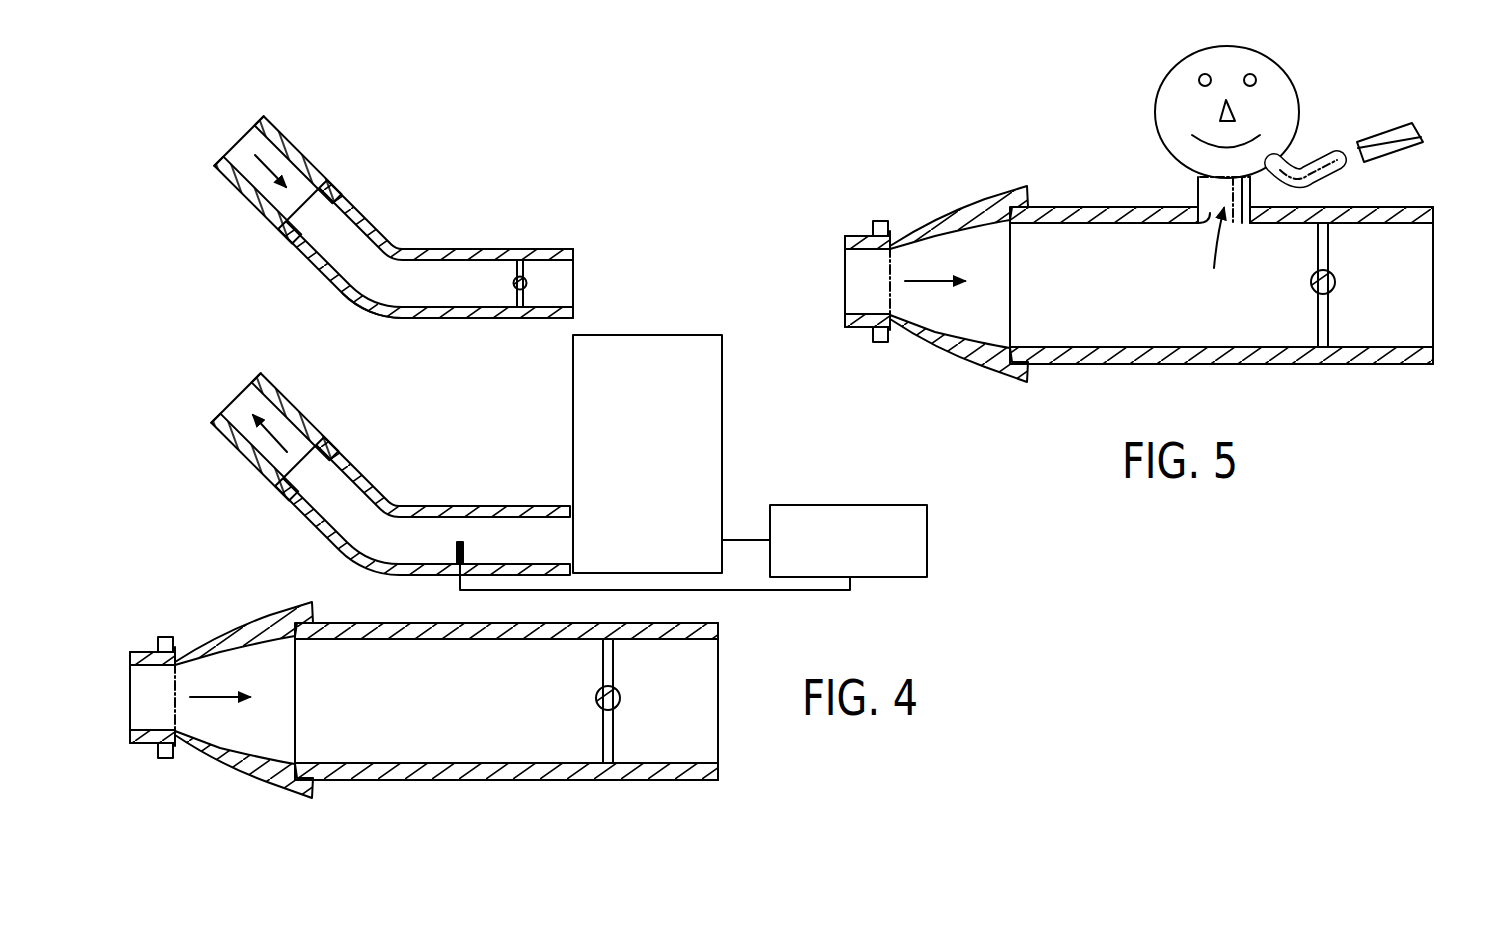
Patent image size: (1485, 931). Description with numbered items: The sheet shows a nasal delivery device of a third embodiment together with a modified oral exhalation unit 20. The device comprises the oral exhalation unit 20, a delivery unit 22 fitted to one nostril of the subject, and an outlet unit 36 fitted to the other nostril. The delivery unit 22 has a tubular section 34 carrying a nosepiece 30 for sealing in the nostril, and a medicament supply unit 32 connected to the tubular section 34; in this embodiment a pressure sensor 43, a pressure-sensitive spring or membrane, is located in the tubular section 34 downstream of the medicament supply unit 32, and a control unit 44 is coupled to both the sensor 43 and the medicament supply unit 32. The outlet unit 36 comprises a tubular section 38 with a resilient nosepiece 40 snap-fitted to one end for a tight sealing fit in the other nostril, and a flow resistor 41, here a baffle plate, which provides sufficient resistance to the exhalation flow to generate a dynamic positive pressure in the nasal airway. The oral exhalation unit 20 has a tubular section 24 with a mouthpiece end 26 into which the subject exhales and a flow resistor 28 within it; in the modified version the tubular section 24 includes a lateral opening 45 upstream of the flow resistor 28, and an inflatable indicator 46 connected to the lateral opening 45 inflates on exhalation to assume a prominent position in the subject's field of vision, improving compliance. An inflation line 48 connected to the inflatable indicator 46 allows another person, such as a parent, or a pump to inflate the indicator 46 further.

In FIG. 4, the oral exhalation unit 20 is at (506, 732).
In FIG. 5, the oral exhalation unit 20 is at (1221, 314).
In FIG. 4, the delivery unit 22 is at (469, 445).
In FIG. 4, the tubular section 24 is at (294, 722).
In FIG. 5, the tubular section 24 is at (1009, 304).
In FIG. 4, the inlet connector 26 is at (190, 669).
In FIG. 5, the inlet connector 26 is at (905, 254).
In FIG. 4, the flow resistor 28 is at (573, 701).
In FIG. 5, the flow resistor 28 is at (1289, 285).
In FIG. 4, the nosepiece 30 is at (255, 436).
In FIG. 4, the medicament supply unit 32 is at (677, 454).
In FIG. 4, the tubular section 34 is at (422, 506).
In FIG. 4, the outlet unit 36 is at (425, 244).
In FIG. 4, the tubular section 38 is at (382, 333).
In FIG. 4, the nosepiece 40 is at (257, 179).
In FIG. 4, the flow resistor 41 is at (497, 313).
In FIG. 4, the pressure sensor 43 is at (621, 579).
In FIG. 4, the control unit 44 is at (848, 520).
In FIG. 5, the lateral opening 45 is at (1197, 235).
In FIG. 5, the inflatable figure 46 is at (1263, 112).
In FIG. 5, the inflation line 48 is at (1357, 164).